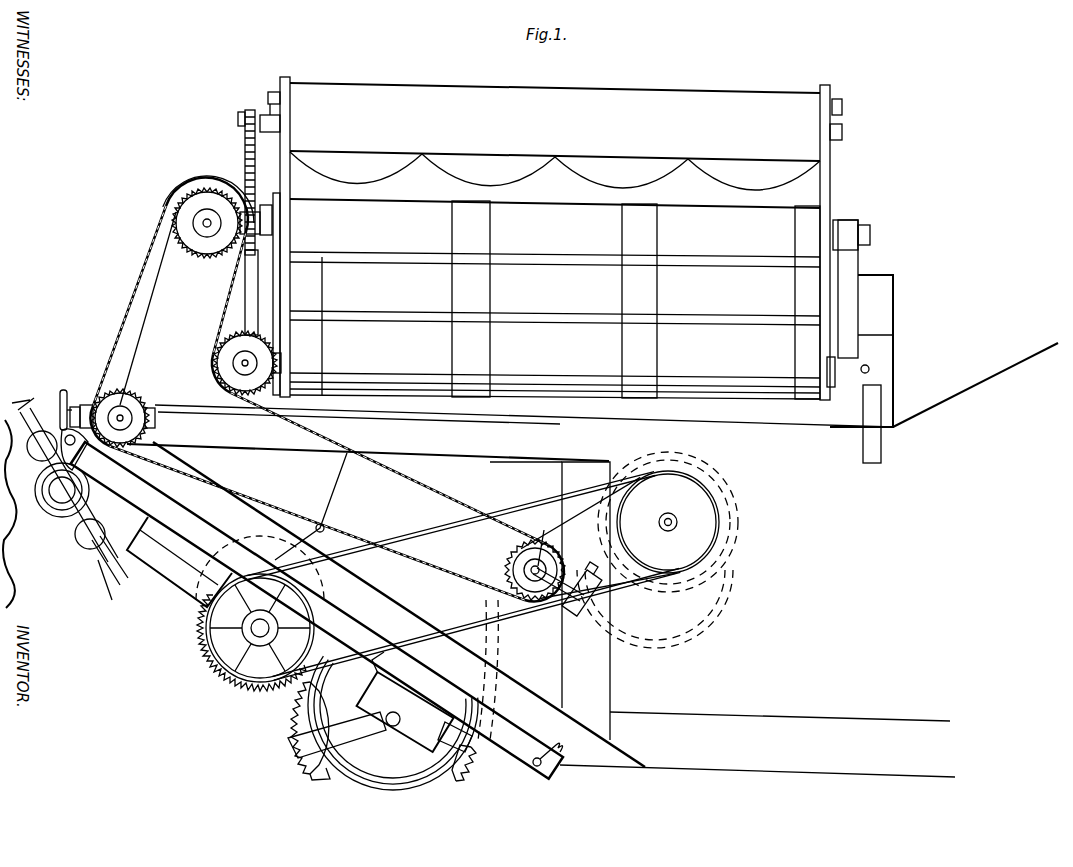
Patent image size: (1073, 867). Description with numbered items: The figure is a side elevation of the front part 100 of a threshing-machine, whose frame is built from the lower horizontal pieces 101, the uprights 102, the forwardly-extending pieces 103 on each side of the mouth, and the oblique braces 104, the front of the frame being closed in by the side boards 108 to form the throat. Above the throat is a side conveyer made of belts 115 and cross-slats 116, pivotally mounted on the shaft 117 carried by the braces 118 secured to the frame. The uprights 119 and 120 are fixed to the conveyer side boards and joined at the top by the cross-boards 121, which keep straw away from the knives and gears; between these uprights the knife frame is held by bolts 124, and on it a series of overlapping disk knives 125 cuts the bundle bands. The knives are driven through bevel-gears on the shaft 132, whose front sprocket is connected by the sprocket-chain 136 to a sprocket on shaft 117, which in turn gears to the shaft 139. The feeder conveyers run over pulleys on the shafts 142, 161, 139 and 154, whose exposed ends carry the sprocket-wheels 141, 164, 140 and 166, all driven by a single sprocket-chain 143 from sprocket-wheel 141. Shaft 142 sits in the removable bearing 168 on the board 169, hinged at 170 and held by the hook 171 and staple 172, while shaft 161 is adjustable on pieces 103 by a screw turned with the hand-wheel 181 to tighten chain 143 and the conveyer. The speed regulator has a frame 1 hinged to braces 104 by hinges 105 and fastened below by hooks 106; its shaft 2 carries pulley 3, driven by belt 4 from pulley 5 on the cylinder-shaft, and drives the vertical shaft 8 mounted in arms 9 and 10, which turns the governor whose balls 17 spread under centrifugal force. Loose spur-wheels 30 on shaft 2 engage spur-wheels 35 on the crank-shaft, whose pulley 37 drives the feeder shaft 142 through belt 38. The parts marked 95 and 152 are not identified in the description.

The frame 1 is at (128, 500).
The shaft 2 is at (260, 636).
The pulley 3 is at (206, 646).
The belt 4 is at (512, 507).
The pulley 5 is at (722, 544).
The shaft 8 is at (163, 563).
The arm 9 is at (190, 604).
The arm 10 is at (171, 562).
The balls 17 is at (84, 545).
The spur-wheels 30 is at (206, 667).
The spur-wheels 35 is at (294, 711).
The pulley 37 is at (397, 778).
The belt 38 is at (296, 738).
The ring 95 is at (42, 510).
The front part of threshing-machine 100 is at (944, 392).
The lower horizontal pieces 101 is at (749, 709).
The uprights 102 is at (550, 601).
The forwardly-extending pieces 103 is at (510, 433).
The braces 104 is at (399, 604).
The hinges 105 is at (73, 448).
The hooks 106 is at (560, 756).
The side boards 108 is at (462, 483).
The belts 115 is at (320, 283).
The cross-slats 116 is at (394, 312).
The shaft 117 is at (871, 235).
The braces 118 is at (265, 270).
The upright 119 is at (290, 166).
The upright 120 is at (830, 155).
The cross-boards 121 is at (555, 122).
The bolts 124 is at (842, 107).
The disk knives 125 is at (555, 171).
The shaft 132 is at (262, 110).
The sprocket-chain 136 is at (246, 148).
The shaft 139 is at (203, 225).
The sprocket-wheel 140 is at (187, 210).
The sprocket-wheel 141 is at (534, 562).
The shaft 142 is at (590, 556).
The sprocket-chain 143 is at (130, 327).
The bolt 152 is at (870, 369).
The shaft 154 is at (242, 364).
The shaft 161 is at (126, 420).
The sprocket-wheel 164 is at (133, 402).
The sprocket-wheel 166 is at (222, 345).
The removable bearing 168 is at (615, 598).
The board 169 is at (462, 547).
The hinge 170 is at (318, 531).
The hook 171 is at (668, 522).
The staple 172 is at (634, 568).
The hand-wheel 181 is at (64, 388).